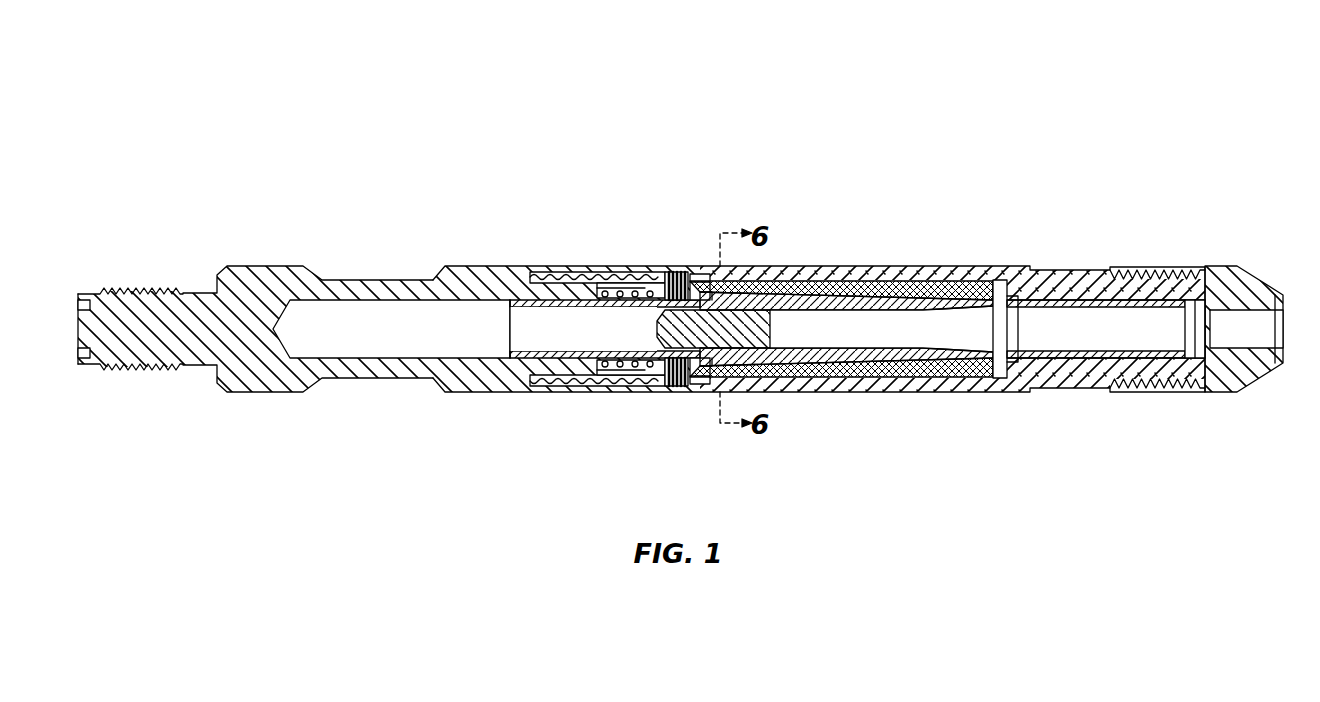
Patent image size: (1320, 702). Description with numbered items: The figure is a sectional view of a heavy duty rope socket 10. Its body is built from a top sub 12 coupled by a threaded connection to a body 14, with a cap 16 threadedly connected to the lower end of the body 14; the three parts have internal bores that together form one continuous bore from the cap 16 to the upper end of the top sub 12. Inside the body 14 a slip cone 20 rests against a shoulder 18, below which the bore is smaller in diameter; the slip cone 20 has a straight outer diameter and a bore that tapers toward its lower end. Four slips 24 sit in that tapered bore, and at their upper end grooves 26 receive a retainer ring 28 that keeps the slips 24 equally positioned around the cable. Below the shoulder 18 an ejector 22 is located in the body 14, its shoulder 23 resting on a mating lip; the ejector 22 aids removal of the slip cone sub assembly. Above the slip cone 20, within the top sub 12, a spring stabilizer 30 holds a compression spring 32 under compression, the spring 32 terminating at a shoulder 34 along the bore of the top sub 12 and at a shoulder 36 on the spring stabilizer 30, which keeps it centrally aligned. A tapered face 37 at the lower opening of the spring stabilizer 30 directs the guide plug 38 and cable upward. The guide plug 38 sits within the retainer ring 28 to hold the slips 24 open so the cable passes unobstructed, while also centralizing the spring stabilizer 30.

The rope socket 10 is at (185, 116).
The top sub 12 is at (322, 279).
The body 14 is at (820, 267).
The cap 16 is at (1210, 268).
The shoulder 18 is at (986, 373).
The slip cone 20 is at (912, 281).
The ejector 22 is at (998, 281).
The shoulder 23 is at (1050, 300).
The slips 24 is at (872, 372).
The grooves 26 is at (697, 273).
The retainer ring 28 is at (716, 362).
The spring stabilizer 30 is at (565, 271).
The compression spring 32 is at (625, 380).
The shoulder 34 is at (600, 377).
The shoulder 36 is at (670, 381).
The tapered face 37 is at (705, 381).
The guide plug 38 is at (662, 329).